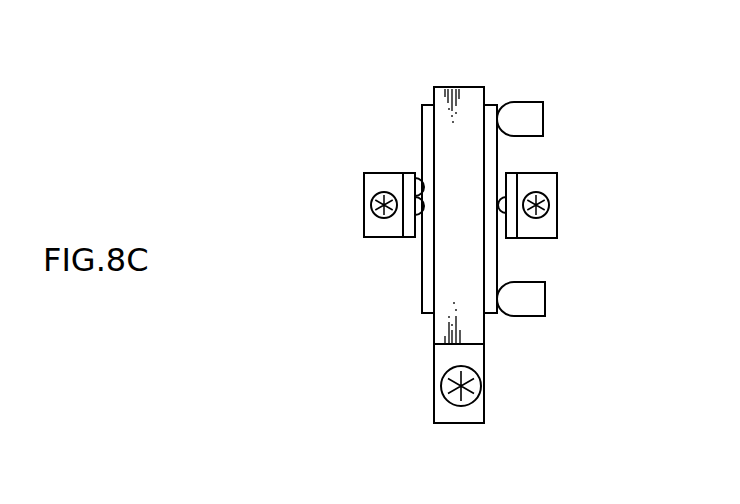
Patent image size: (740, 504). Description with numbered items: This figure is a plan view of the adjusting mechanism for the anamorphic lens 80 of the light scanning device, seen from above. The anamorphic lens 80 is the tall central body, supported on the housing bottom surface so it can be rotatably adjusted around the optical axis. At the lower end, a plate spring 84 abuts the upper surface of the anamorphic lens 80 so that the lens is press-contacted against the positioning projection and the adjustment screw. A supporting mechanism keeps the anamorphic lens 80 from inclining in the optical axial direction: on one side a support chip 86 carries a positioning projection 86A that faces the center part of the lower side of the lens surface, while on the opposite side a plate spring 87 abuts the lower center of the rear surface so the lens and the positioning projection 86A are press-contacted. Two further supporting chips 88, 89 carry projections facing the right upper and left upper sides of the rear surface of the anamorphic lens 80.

The anamorphic lens 80 is at (493, 104).
The plate spring 84 is at (472, 331).
The support chip 86 is at (375, 239).
The positioning projection 86A is at (424, 180).
The plate spring 87 is at (557, 193).
The supporting chip 88 is at (545, 295).
The supporting chip 89 is at (543, 117).